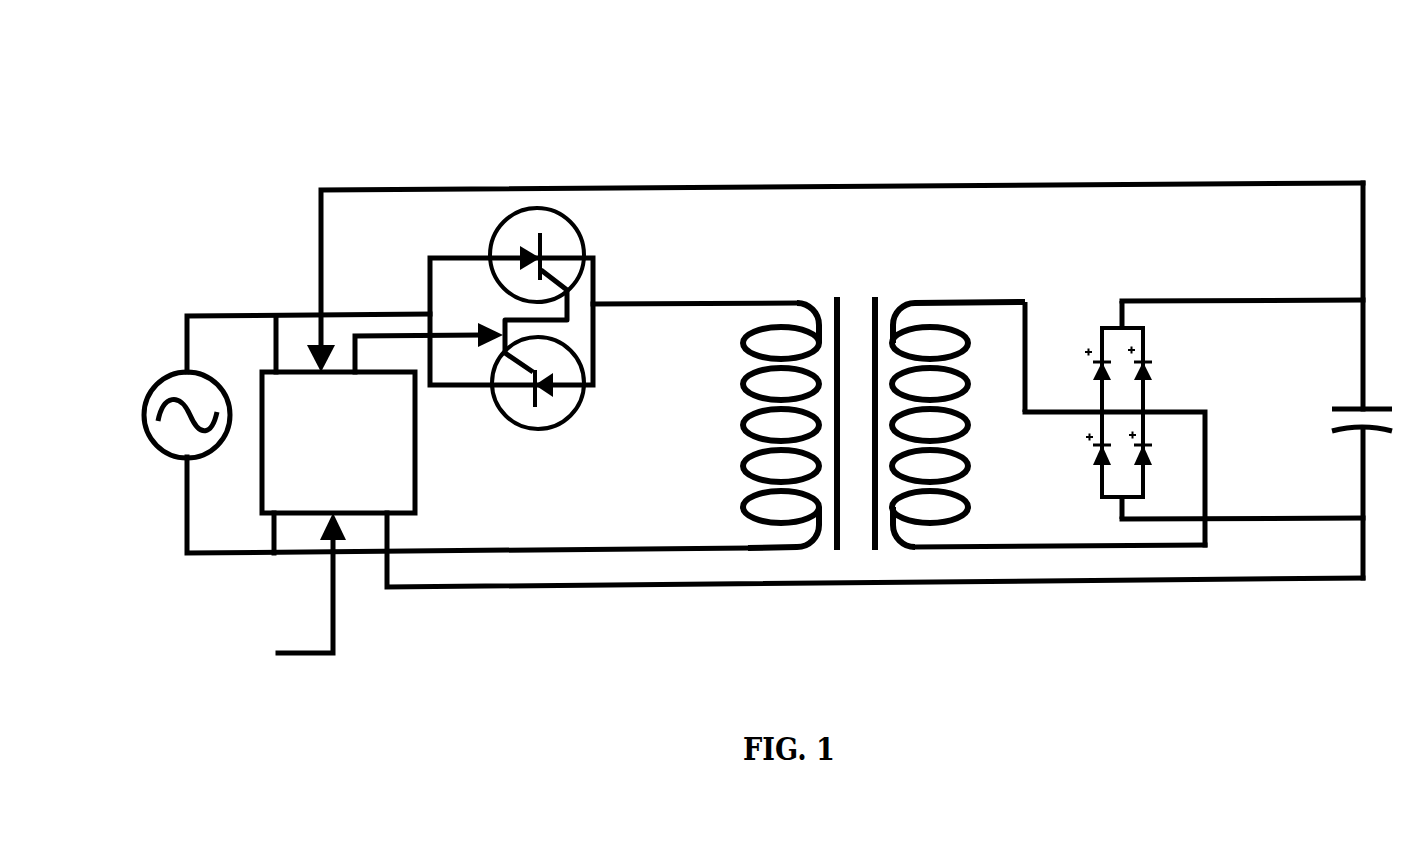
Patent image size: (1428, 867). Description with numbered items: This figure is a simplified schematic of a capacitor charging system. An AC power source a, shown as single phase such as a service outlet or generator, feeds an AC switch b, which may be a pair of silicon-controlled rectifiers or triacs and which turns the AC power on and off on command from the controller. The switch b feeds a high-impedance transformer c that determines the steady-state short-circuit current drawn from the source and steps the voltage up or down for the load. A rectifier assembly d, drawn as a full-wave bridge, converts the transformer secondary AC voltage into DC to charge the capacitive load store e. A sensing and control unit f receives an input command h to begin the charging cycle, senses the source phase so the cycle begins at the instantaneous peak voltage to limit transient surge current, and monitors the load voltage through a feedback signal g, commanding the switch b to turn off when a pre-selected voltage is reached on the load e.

The AC power source a is at (138, 357).
The AC switch b is at (605, 221).
The high-impedance transformer c is at (860, 250).
The rectifier assembly d is at (1082, 247).
The capacitive load store e is at (1395, 345).
The sensing and control unit f is at (334, 428).
The feedback signal g is at (372, 144).
The input command h is at (250, 656).